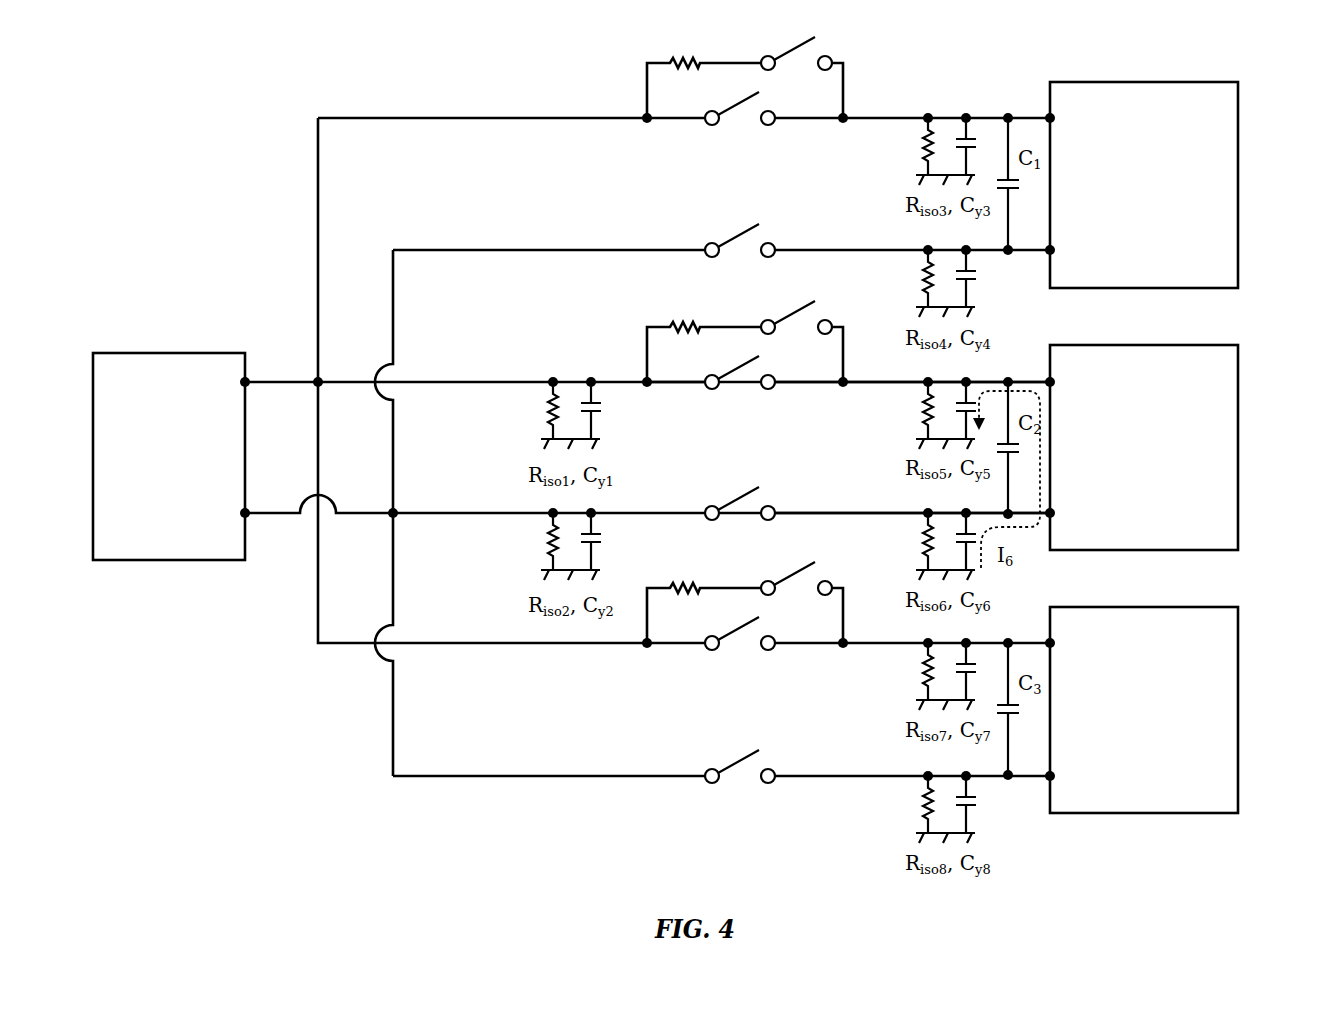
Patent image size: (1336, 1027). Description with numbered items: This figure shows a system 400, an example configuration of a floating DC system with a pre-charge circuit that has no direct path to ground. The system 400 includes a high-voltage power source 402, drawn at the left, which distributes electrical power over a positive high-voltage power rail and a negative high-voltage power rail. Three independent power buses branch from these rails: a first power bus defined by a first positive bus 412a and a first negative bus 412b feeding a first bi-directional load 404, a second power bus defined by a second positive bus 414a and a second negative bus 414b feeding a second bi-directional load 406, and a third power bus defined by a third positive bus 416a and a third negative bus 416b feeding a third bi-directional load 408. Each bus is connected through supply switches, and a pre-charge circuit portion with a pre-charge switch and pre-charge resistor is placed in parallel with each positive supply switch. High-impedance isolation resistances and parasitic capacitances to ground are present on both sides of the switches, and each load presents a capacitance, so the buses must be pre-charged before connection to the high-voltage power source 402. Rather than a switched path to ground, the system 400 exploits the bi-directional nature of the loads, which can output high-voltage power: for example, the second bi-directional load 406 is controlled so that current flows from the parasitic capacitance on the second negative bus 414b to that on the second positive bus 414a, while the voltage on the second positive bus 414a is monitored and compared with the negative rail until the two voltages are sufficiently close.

The system 400 is at (212, 185).
The high-voltage power source 402 is at (165, 561).
The first bi-directional load 404 is at (1238, 188).
The second bi-directional load 406 is at (1238, 451).
The third bi-directional load 408 is at (1238, 713).
The first positive bus 412a is at (872, 118).
The first negative bus 412b is at (872, 250).
The second positive bus 414a is at (872, 382).
The second negative bus 414b is at (872, 513).
The third positive bus 416a is at (872, 643).
The third negative bus 416b is at (872, 776).